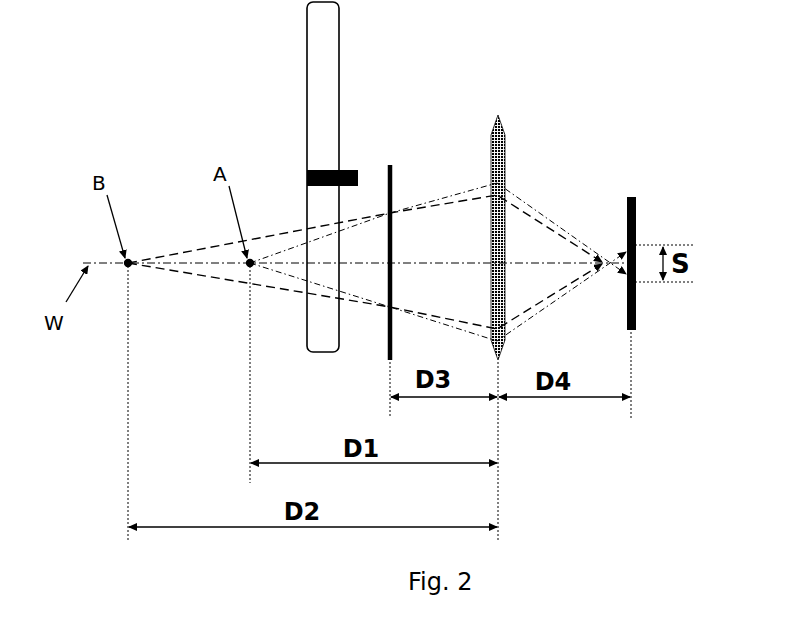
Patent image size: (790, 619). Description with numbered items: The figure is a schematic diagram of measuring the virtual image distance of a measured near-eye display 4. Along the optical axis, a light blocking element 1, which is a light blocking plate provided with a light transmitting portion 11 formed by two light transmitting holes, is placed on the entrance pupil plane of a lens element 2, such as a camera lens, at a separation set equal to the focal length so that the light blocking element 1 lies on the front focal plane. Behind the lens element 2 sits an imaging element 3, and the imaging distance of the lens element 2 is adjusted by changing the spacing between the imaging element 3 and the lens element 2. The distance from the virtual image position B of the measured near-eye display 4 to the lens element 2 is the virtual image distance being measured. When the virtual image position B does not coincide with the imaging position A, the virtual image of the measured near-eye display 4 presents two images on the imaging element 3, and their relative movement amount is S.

The light blocking element 1 is at (391, 163).
The light transmitting portion 11 is at (393, 305).
The lens element 2 is at (506, 143).
The imaging element 3 is at (637, 197).
The measured near-eye display 4 is at (305, 92).